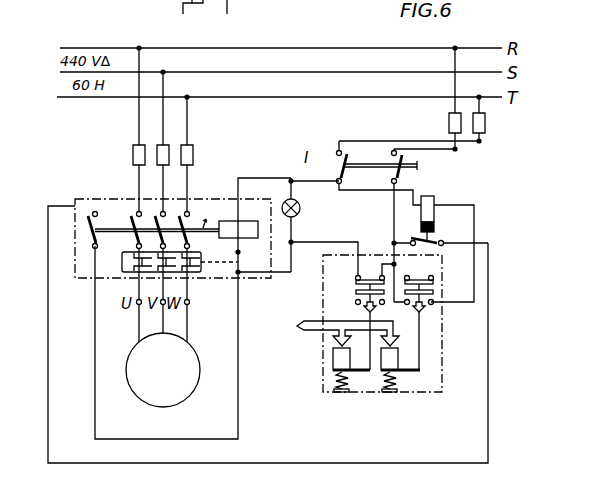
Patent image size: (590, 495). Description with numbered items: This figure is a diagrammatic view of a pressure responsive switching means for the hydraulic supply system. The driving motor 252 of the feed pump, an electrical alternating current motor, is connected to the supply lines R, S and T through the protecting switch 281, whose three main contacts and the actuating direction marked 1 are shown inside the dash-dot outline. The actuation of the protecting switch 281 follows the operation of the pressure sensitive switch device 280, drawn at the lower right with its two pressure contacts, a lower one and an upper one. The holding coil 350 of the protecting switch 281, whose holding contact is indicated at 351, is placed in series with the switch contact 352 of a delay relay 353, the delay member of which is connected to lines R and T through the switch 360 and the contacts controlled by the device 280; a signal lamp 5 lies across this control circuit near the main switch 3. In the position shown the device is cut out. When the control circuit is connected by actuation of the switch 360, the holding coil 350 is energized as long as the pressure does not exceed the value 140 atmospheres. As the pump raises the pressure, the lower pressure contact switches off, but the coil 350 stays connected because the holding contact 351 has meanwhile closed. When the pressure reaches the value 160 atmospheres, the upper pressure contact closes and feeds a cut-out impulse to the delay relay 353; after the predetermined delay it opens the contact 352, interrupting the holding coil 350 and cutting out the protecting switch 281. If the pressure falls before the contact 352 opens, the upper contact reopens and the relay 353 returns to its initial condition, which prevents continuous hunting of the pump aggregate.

The protecting switch 281 is at (207, 198).
The holding contact 351 is at (86, 221).
The holding coil 350 is at (245, 228).
The actuating direction arrow 1 is at (205, 223).
The driving motor 252 is at (180, 388).
The signal lamp 5 is at (296, 225).
The main switch 3 is at (378, 131).
The switch 360 is at (377, 148).
The delay relay 353 is at (431, 200).
The switch contact 352 is at (443, 238).
The pressure sensitive switch device 280 is at (366, 341).
The pressure value of 140 atm 140 is at (342, 359).
The pressure value of 160 atm 160 is at (390, 359).